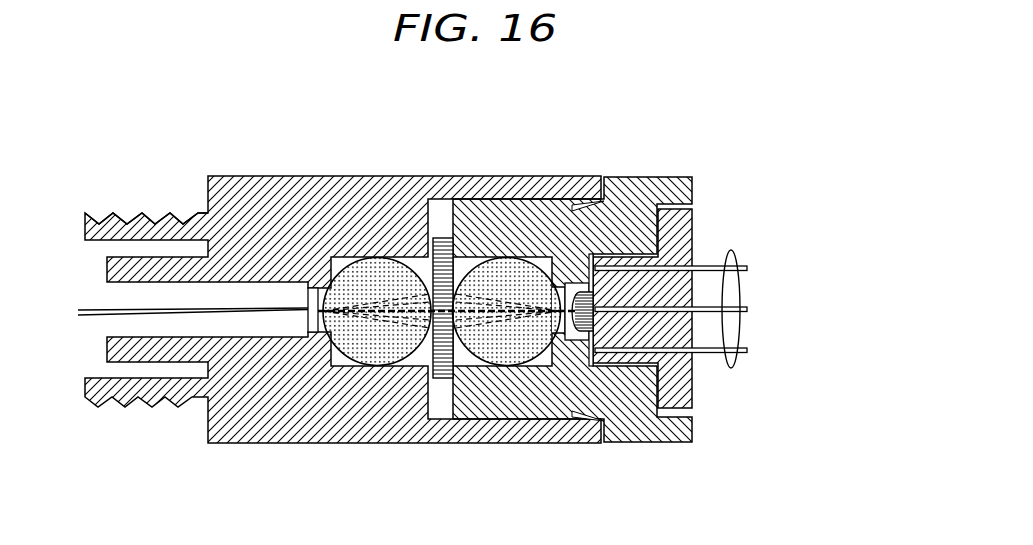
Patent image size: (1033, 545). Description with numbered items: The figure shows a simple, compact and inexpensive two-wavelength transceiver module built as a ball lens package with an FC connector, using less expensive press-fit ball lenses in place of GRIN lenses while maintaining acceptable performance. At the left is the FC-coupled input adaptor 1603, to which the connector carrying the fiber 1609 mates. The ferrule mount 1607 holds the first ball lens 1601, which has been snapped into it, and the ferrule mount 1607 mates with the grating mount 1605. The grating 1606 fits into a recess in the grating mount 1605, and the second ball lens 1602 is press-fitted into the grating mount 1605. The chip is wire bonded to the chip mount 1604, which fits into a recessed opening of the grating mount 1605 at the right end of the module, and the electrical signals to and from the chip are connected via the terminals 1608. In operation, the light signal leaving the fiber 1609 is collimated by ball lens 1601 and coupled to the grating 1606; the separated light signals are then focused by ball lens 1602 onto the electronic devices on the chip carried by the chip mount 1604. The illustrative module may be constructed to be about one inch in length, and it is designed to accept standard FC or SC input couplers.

The ball lens 1601 is at (375, 273).
The ball lens 1602 is at (508, 272).
The FC-coupled input adaptor 1603 is at (147, 212).
The chip mount 1604 is at (692, 400).
The grating mount 1605 is at (645, 442).
The grating 1606 is at (443, 255).
The ferrule mount 1607 is at (282, 477).
The terminals 1608 is at (730, 250).
The fiber 1609 is at (88, 316).